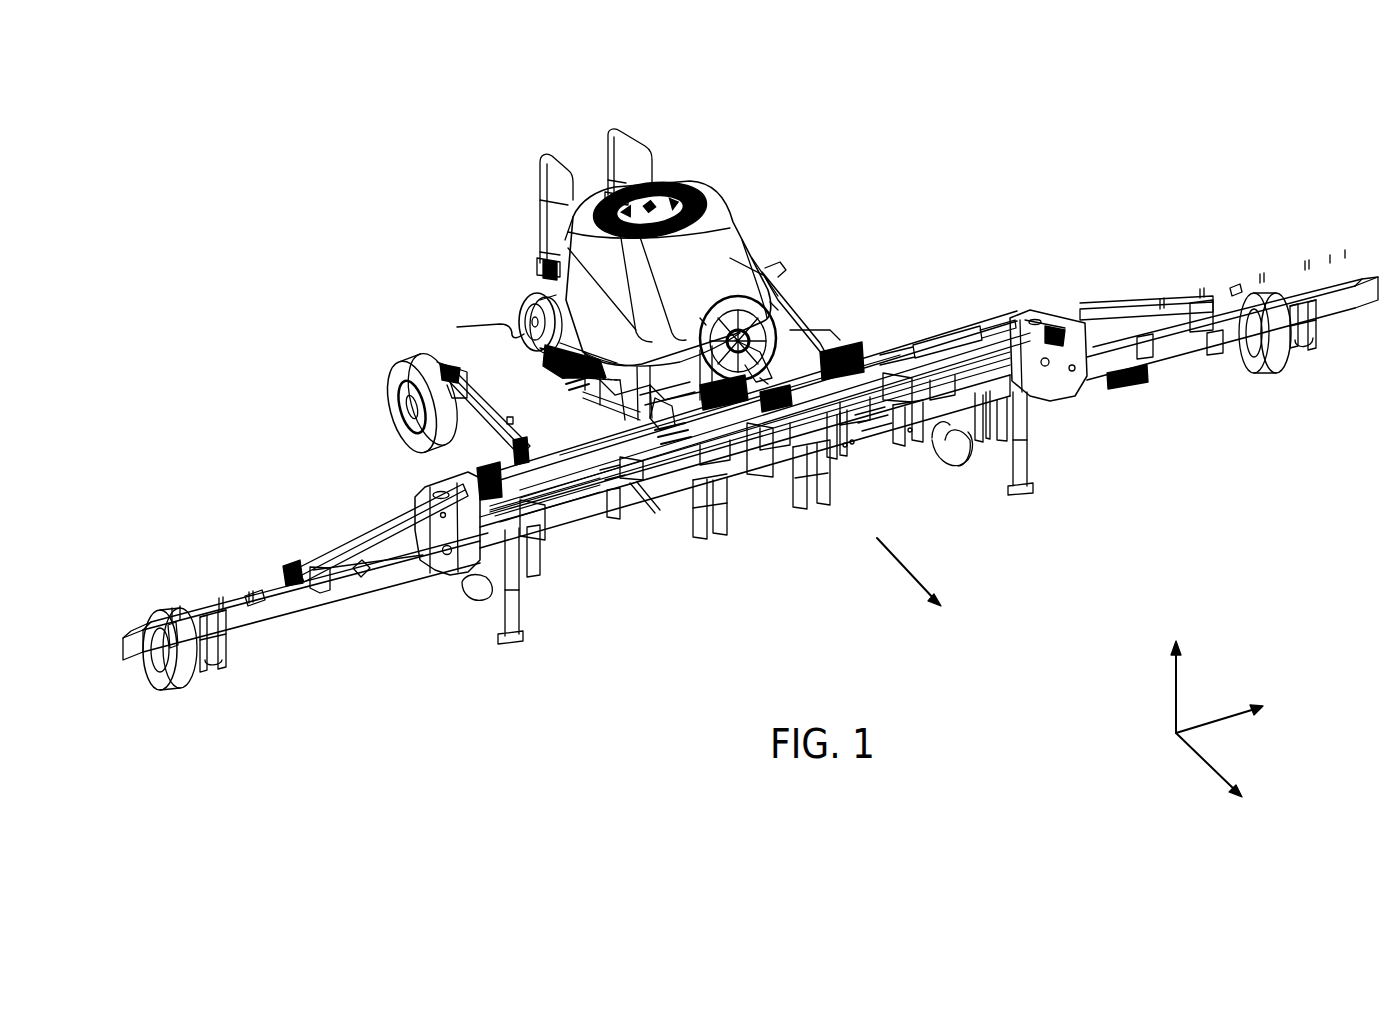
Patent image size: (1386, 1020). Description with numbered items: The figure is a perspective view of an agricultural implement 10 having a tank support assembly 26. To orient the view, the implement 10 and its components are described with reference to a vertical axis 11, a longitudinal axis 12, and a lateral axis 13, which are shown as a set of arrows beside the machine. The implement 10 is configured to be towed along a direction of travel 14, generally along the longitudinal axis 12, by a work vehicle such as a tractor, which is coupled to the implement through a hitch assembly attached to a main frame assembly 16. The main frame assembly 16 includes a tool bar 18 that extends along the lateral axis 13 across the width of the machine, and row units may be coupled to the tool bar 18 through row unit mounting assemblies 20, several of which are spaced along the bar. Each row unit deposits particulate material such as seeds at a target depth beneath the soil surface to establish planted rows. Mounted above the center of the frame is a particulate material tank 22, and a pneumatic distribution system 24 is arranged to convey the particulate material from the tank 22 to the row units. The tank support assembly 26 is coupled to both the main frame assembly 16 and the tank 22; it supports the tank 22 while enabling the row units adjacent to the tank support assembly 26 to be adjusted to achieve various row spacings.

The agricultural implement 10 is at (1017, 119).
The vertical axis 11 is at (1172, 692).
The longitudinal axis 12 is at (1205, 755).
The lateral axis 13 is at (1212, 712).
The direction of travel 14 is at (905, 566).
The main frame assembly 16 is at (643, 529).
The tool bar 18 is at (270, 616).
The row unit mounting assemblies 20 is at (311, 559).
The particulate material tank 22 is at (731, 229).
The pneumatic distribution system 24 is at (517, 293).
The tank support assembly 26 is at (611, 407).